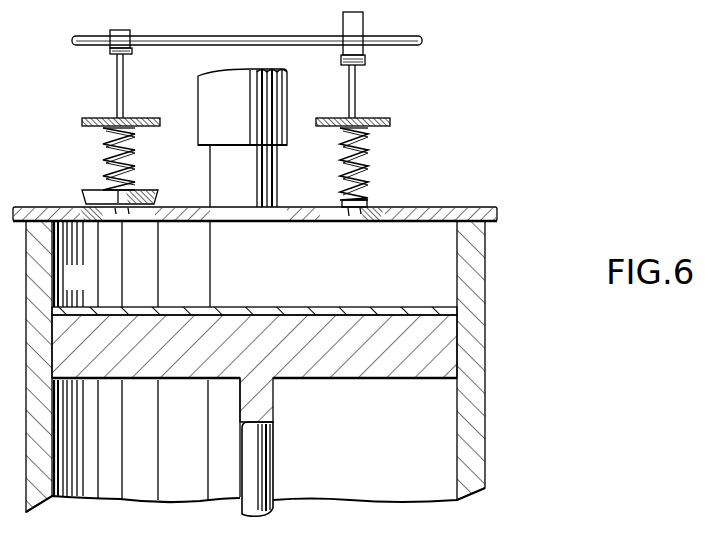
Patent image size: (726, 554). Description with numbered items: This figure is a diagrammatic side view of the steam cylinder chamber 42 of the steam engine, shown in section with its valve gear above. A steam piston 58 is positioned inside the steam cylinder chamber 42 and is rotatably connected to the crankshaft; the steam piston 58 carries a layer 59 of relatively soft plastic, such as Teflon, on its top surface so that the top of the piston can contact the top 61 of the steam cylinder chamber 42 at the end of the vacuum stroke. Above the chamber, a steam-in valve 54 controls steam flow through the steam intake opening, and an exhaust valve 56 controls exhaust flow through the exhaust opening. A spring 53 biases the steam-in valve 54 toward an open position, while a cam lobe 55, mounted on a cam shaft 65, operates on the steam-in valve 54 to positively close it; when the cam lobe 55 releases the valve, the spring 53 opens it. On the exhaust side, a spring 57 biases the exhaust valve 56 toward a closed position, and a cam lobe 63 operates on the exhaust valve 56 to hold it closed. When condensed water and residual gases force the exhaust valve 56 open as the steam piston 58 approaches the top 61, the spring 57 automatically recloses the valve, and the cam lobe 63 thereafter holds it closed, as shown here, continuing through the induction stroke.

The steam cylinder chamber 42 is at (44, 290).
The spring 53 is at (136, 162).
The steam-in valve 54 is at (150, 196).
The cam lobe 55 is at (112, 32).
The exhaust valve 56 is at (372, 207).
The spring 57 is at (368, 163).
The steam piston 58 is at (344, 368).
The layer 59 is at (196, 310).
The top 61 is at (182, 233).
The cam lobe 63 is at (344, 30).
The cam shaft 65 is at (210, 38).